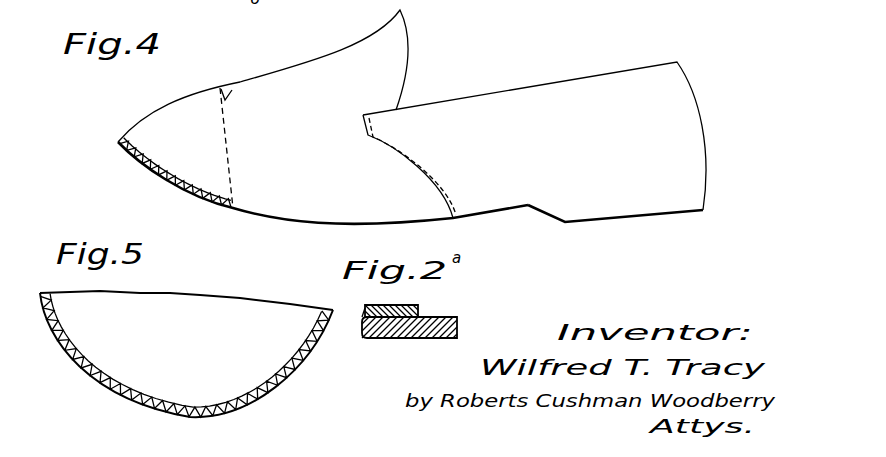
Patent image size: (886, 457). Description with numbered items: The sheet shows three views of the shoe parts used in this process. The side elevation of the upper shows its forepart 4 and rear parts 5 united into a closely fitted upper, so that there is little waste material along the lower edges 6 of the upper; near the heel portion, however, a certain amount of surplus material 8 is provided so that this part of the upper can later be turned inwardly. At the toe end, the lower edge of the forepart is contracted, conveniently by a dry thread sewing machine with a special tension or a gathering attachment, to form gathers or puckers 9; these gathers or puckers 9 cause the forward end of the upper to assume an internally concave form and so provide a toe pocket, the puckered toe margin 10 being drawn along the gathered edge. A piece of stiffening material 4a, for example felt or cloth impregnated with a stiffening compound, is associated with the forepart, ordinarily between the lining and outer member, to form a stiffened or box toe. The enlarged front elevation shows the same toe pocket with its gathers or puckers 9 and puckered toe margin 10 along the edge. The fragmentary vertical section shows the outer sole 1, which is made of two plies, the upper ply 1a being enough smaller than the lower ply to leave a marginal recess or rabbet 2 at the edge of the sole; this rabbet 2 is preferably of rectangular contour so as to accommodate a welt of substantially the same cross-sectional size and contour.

In FIG. 2A, the outer sole 1 is at (362, 341).
In FIG. 2A, the upper ply 1a is at (364, 308).
In FIG. 2A, the marginal recess or rabbet 2 is at (428, 317).
In FIG. 4, the forepart 4 is at (320, 64).
In FIG. 5, the forepart 4 is at (245, 316).
In FIG. 4, the stiffening material 4a is at (238, 84).
In FIG. 4, the rear parts 5 is at (575, 90).
In FIG. 4, the lower edges 6 is at (296, 225).
In FIG. 4, the surplus material 8 is at (630, 219).
In FIG. 4, the gathers or puckers 9 is at (140, 158).
In FIG. 5, the gathers or puckers 9 is at (100, 381).
In FIG. 4, the gathered toe margin 10 is at (196, 191).
In FIG. 5, the gathered toe margin 10 is at (98, 388).